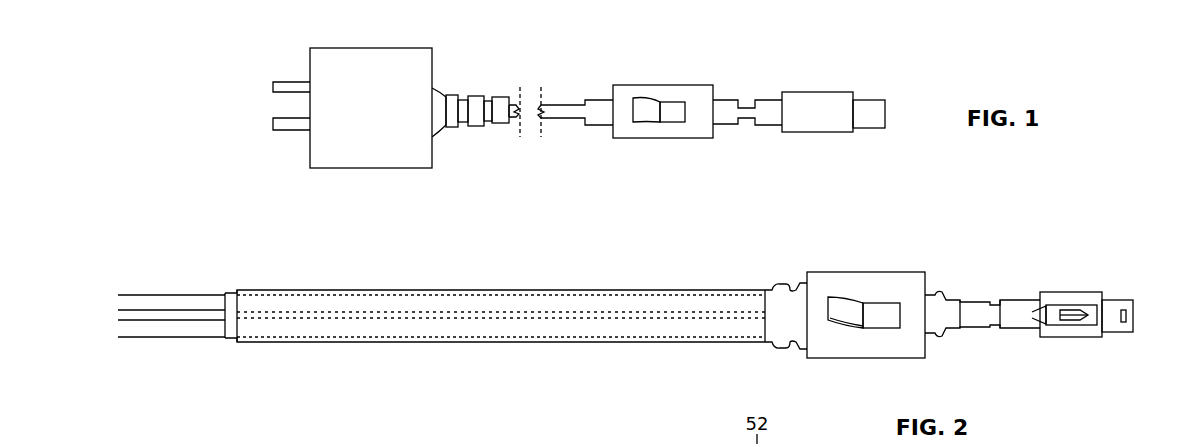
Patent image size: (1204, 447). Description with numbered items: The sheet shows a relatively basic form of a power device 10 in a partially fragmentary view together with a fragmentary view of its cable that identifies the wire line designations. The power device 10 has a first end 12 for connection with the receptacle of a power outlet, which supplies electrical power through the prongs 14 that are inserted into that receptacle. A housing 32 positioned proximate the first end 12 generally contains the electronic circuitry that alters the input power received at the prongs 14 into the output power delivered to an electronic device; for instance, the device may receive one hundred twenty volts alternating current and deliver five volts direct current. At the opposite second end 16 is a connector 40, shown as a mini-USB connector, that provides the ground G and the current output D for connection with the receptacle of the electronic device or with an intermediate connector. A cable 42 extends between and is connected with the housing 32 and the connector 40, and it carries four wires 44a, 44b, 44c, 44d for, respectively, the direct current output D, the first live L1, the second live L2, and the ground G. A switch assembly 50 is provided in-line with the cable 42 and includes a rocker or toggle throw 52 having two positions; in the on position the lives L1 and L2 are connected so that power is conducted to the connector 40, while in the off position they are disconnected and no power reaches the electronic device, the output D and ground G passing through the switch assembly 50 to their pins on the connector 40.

In FIG. 1, the power device 10 is at (731, 77).
In FIG. 1, the first end 12 is at (367, 133).
In FIG. 1, the prongs 14 is at (273, 87).
In FIG. 1, the second end 16 is at (851, 158).
In FIG. 2, the second end 16 is at (1067, 314).
In FIG. 1, the housing 32 is at (378, 168).
In FIG. 1, the connector 40 is at (865, 94).
In FIG. 2, the connector 40 is at (1117, 316).
In FIG. 1, the cable 42 is at (565, 100).
In FIG. 2, the cable 42 is at (441, 368).
In FIG. 2, the wire 44a is at (118, 294).
In FIG. 2, the wire 44b is at (182, 338).
In FIG. 2, the wire 44c is at (119, 321).
In FIG. 2, the wire 44d is at (182, 310).
In FIG. 1, the switch assembly 50 is at (664, 158).
In FIG. 2, the switch assembly 50 is at (875, 284).
In FIG. 2, the throw 52 is at (831, 297).